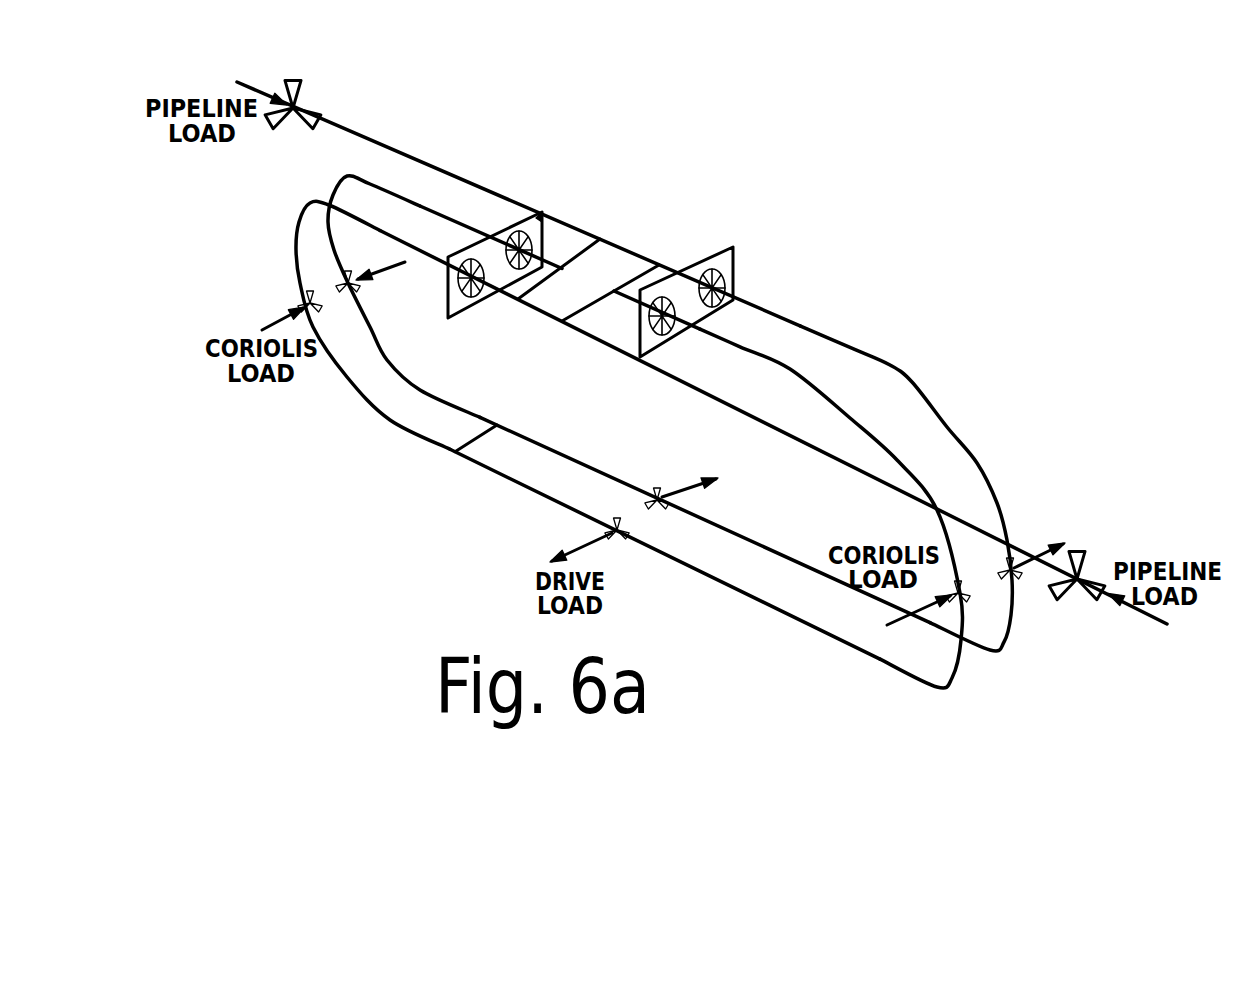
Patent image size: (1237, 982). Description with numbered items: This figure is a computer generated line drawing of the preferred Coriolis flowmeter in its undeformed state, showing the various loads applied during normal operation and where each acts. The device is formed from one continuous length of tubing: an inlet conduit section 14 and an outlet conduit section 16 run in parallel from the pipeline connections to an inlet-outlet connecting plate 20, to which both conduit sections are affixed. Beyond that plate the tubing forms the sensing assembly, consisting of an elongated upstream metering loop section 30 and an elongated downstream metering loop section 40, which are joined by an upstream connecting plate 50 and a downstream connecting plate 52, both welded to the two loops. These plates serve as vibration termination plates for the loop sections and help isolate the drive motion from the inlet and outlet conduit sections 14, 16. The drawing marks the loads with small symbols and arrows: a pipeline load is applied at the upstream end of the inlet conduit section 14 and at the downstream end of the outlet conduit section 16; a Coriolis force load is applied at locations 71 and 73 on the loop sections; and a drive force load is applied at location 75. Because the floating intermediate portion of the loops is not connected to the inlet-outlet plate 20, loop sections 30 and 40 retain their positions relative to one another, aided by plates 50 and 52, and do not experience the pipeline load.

The inlet conduit section 14 is at (846, 460).
The outlet conduit section 16 is at (417, 160).
The inlet-outlet connecting plate 20 is at (620, 252).
The upstream metering loop section 30 is at (388, 421).
The downstream metering loop section 40 is at (454, 450).
The upstream connecting plate 50 is at (541, 218).
The downstream connecting plate 52 is at (735, 279).
The Coriolis force load location 71 is at (320, 296).
The Coriolis force load location 73 is at (994, 575).
The drive force load location 75 is at (630, 518).